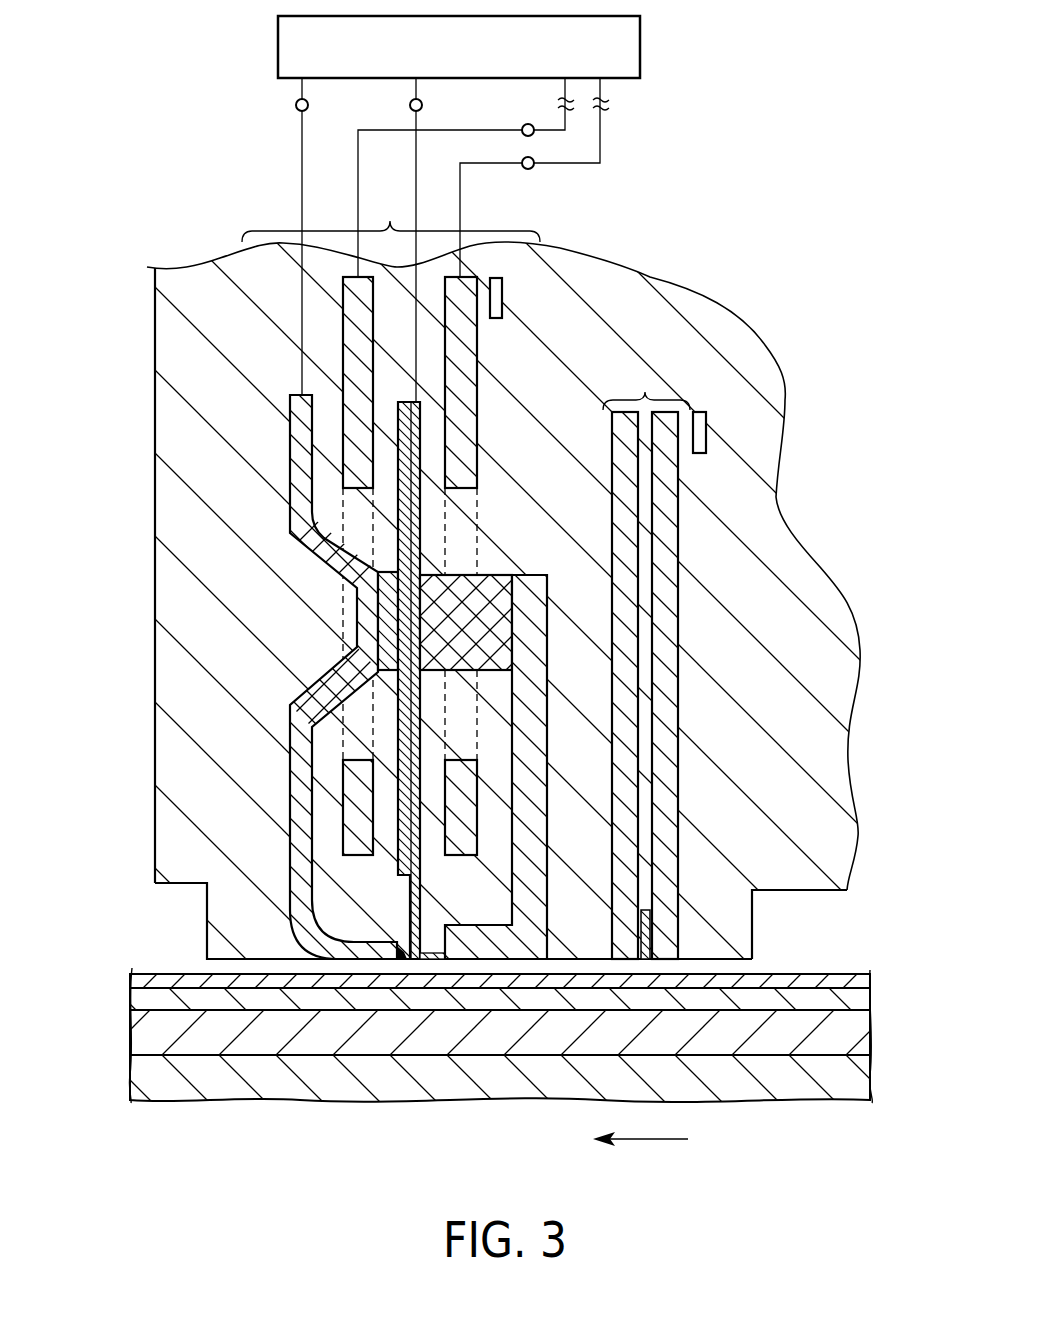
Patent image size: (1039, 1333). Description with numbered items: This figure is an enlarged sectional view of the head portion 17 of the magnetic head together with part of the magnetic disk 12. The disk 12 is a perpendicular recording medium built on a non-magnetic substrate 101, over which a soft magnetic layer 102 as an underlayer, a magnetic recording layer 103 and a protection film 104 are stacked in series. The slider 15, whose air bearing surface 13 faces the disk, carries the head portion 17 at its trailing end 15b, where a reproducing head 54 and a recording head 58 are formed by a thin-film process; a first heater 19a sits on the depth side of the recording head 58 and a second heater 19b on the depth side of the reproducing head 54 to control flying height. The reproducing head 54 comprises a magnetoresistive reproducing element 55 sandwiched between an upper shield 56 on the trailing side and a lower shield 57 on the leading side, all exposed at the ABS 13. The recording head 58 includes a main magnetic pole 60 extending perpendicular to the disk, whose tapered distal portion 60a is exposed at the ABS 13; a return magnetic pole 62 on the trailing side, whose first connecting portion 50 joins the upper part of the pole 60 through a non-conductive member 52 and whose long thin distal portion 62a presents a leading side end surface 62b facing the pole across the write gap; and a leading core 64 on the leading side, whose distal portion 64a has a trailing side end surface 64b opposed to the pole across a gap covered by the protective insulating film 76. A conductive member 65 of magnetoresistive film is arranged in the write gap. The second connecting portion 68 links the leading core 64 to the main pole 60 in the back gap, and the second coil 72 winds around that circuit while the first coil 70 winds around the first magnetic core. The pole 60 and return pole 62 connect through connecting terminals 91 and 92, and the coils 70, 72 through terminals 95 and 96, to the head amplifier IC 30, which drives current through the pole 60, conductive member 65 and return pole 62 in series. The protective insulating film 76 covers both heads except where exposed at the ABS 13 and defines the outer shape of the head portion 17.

The head amplifier IC 30 is at (278, 44).
The connecting terminal 92 is at (294, 105).
The connecting terminal 91 is at (409, 105).
The terminal 95 is at (524, 126).
The terminal 96 is at (534, 167).
The recording head 58 is at (391, 216).
The protective insulating film 76 is at (178, 282).
The head portion 17 is at (654, 278).
The slider 15 is at (466, 579).
The trailing end 15b is at (154, 500).
The air bearing surface (ABS) 13 is at (788, 890).
The first heater 19a is at (503, 294).
The second heater 19b is at (707, 425).
The first coil 70 is at (346, 326).
The second coil 72 is at (468, 344).
The reproducing head 54 is at (673, 655).
The lower shield 57 is at (632, 578).
The upper shield 56 is at (672, 617).
The reproducing element 55 is at (652, 921).
The second connecting portion 68 is at (488, 572).
The leading core 64 is at (547, 666).
The distal portion 64a is at (505, 961).
The trailing side end surface 64b is at (440, 936).
The main magnetic pole 60 is at (416, 858).
The distal portion 60a is at (416, 961).
The return magnetic pole 62 is at (268, 724).
The distal portion 62a is at (340, 961).
The leading side end surface 62b is at (400, 948).
The conductive member 65 is at (400, 961).
The non-conductive member 52 is at (382, 606).
The first connecting portion 50 is at (368, 618).
The magnetic disk 12 is at (468, 1076).
The substrate 101 is at (131, 1094).
The soft magnetic layer 102 is at (131, 1049).
The magnetic recording layer 103 is at (131, 1011).
The protection film 104 is at (131, 978).